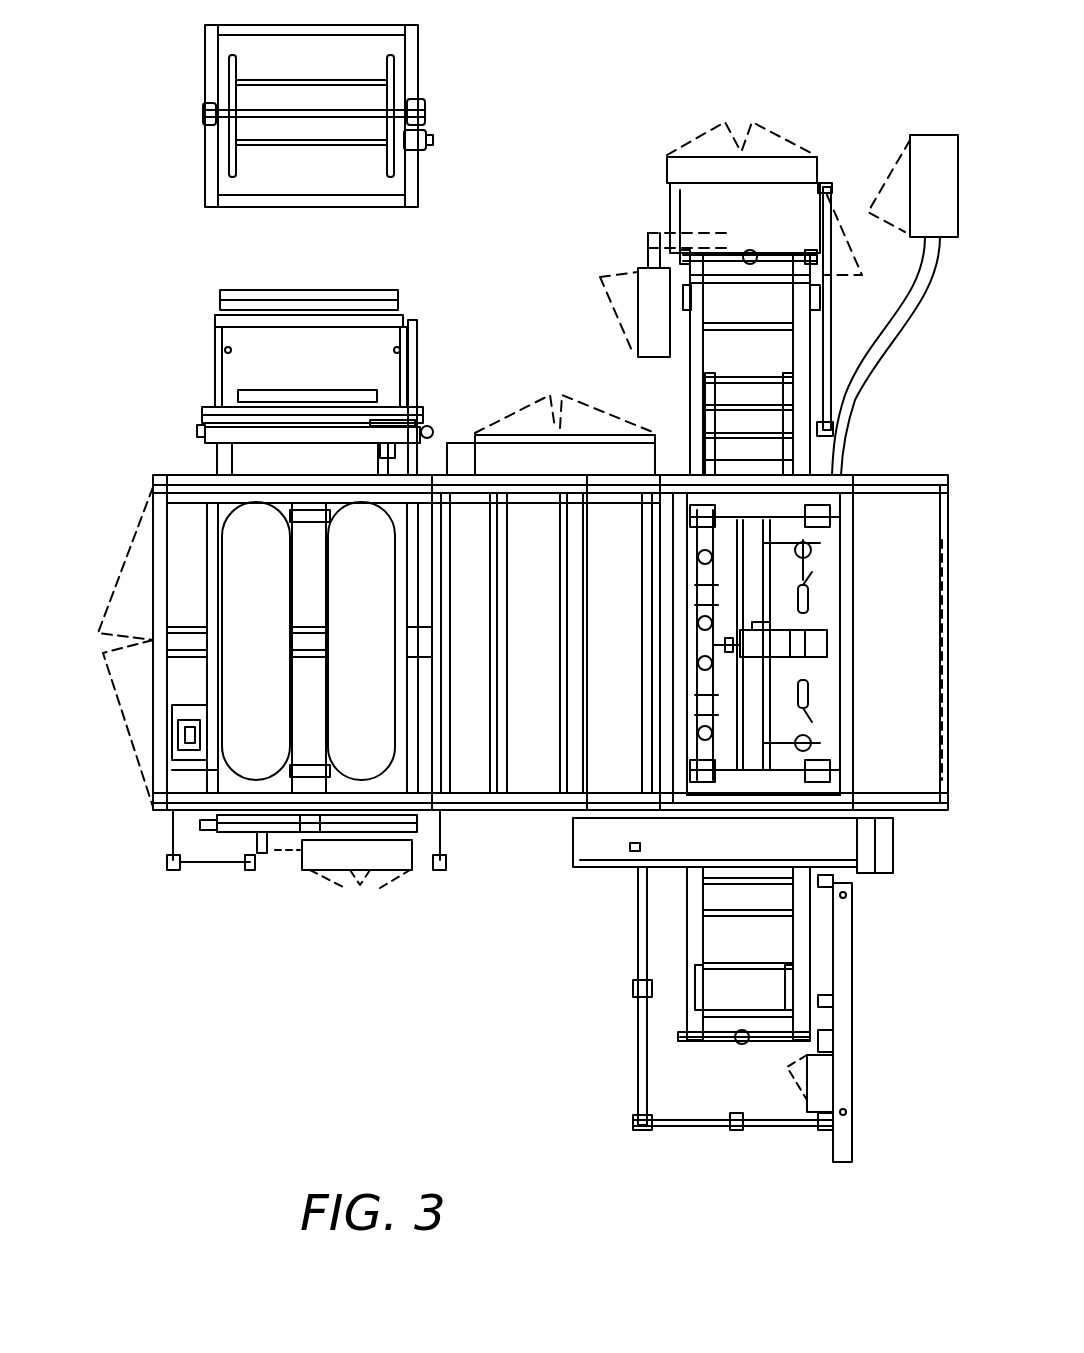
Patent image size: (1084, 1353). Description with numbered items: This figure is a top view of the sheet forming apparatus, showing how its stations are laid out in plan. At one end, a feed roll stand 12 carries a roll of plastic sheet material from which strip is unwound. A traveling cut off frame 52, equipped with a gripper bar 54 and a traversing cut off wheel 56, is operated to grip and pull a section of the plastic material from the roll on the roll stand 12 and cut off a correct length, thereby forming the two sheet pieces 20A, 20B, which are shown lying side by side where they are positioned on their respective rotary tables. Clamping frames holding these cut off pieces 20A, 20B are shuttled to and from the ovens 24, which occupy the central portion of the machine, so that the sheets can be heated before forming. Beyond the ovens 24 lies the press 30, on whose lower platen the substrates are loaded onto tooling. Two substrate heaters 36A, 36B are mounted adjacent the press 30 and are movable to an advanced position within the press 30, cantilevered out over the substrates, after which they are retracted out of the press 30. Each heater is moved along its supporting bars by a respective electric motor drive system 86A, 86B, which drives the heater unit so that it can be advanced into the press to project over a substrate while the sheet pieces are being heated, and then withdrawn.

The feed roll stand 12 is at (423, 204).
The traveling cut off frame 52 is at (210, 410).
The gripper bar 54 is at (266, 390).
The traversing cut off wheel 56 is at (413, 400).
The cut off piece 20A is at (300, 752).
The cut off piece 20B is at (290, 530).
The oven 24 is at (500, 820).
The press 30 is at (677, 465).
The substrate heater 36A is at (820, 935).
The substrate heater 36B is at (835, 353).
The electric motor drive system 86A is at (725, 1050).
The electric motor drive system 86B is at (767, 253).